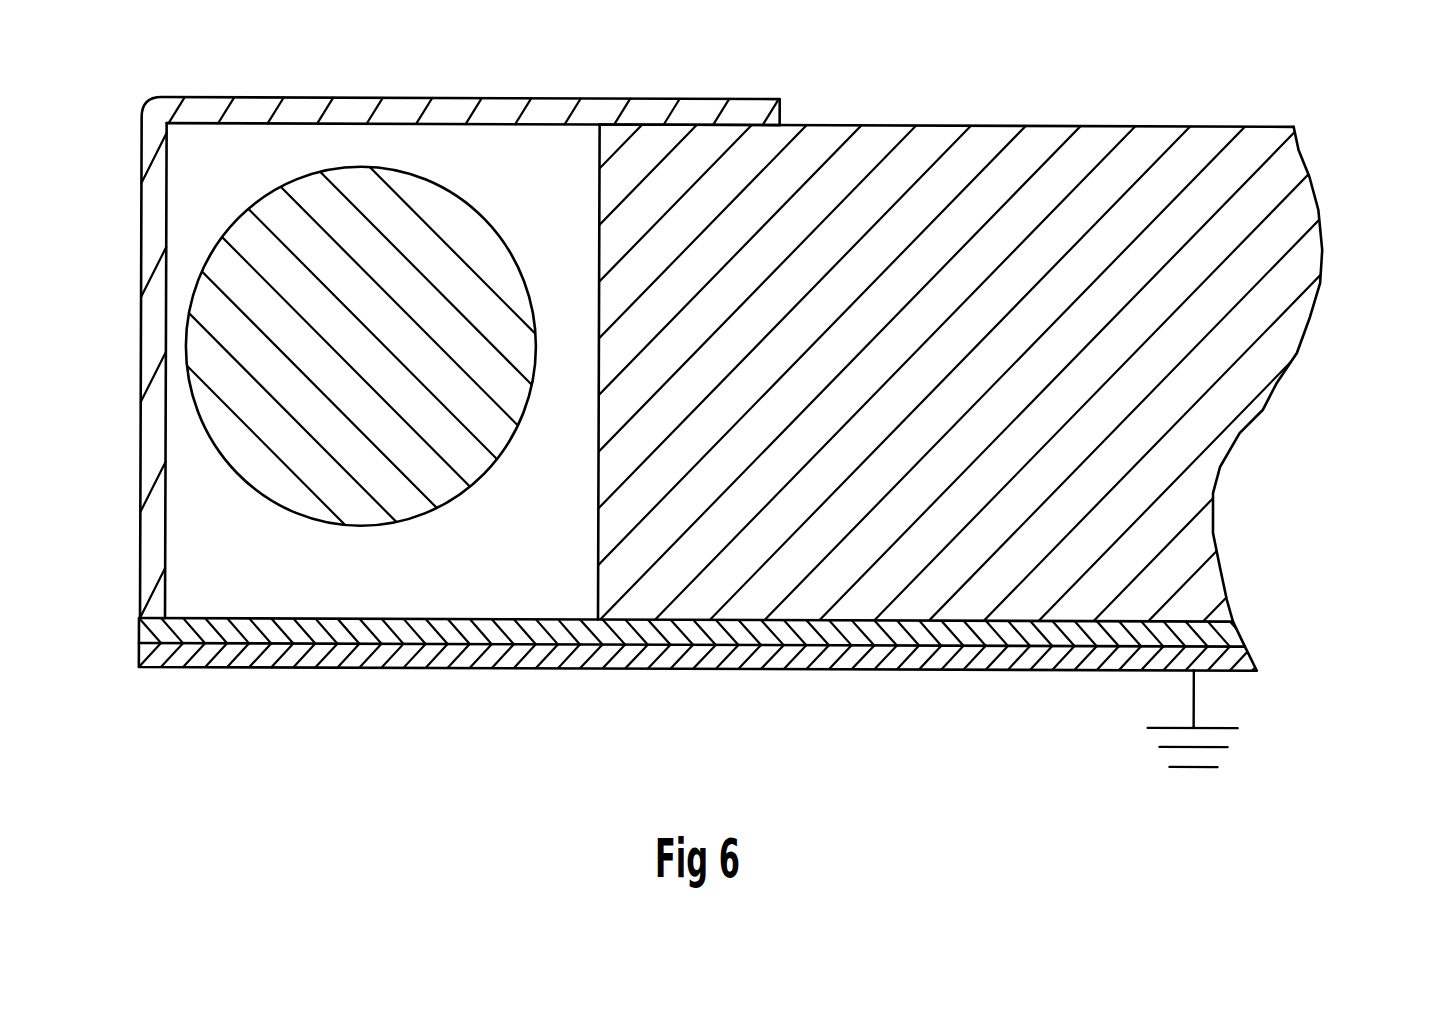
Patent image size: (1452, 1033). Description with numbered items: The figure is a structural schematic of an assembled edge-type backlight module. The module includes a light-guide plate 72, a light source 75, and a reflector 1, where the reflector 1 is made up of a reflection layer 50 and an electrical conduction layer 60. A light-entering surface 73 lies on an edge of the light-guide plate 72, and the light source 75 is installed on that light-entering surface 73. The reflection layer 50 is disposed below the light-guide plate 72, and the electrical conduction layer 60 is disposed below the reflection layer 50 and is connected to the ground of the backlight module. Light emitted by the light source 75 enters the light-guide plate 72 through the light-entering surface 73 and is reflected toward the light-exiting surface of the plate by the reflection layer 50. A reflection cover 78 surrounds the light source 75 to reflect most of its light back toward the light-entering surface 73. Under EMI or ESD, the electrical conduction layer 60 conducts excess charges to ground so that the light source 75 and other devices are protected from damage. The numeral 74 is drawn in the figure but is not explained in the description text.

The reflector 1 is at (139, 618).
The reflection layer 50 is at (1230, 627).
The electrical conduction layer 60 is at (1241, 654).
The light-guide plate 72 is at (1306, 260).
The light-entering surface 73 is at (598, 418).
The top surface 74 is at (958, 123).
The light source 75 is at (357, 516).
The reflection cover 78 is at (155, 215).